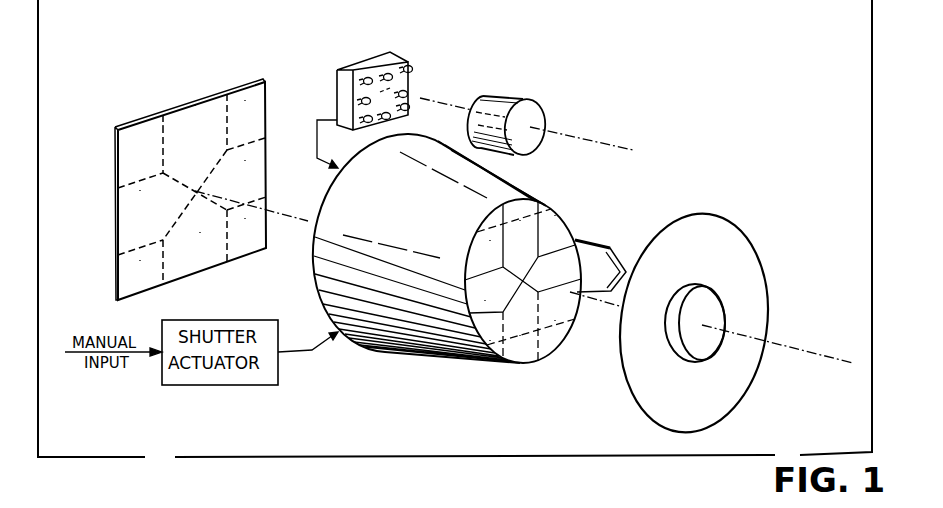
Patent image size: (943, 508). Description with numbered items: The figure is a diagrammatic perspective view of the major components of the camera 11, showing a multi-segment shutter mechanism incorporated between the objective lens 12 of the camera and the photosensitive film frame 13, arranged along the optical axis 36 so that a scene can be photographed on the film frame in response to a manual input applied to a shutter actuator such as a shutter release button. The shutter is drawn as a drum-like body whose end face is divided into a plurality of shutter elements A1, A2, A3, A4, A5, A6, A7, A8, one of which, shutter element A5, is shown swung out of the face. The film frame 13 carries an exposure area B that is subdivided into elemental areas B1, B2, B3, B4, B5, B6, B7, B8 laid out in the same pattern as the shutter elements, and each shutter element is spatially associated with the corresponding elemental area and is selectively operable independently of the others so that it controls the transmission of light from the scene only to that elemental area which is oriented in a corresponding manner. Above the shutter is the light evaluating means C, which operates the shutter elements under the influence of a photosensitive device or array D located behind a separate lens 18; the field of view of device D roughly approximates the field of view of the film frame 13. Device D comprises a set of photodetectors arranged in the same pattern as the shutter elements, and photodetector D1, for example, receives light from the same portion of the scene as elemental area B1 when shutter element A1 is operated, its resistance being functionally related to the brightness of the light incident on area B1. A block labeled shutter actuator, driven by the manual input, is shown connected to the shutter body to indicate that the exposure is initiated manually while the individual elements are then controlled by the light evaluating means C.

The camera 11 is at (783, 156).
The objective lens 12 is at (722, 218).
The photosensitive film frame 13 is at (195, 102).
The lens 18 is at (538, 116).
The optical axis 36 is at (307, 218).
The shutter element A1 is at (485, 252).
The shutter element A2 is at (521, 233).
The shutter element A3 is at (550, 229).
The shutter element A4 is at (485, 293).
The shutter element A5 is at (597, 241).
The shutter element A6 is at (491, 330).
The shutter element A7 is at (519, 323).
The shutter element A8 is at (556, 309).
The film frame area B is at (181, 257).
The elemental area B1 is at (147, 143).
The elemental area B2 is at (195, 125).
The elemental area B3 is at (243, 113).
The elemental area B4 is at (142, 203).
The elemental area B5 is at (241, 172).
The elemental area B6 is at (142, 270).
The elemental area B7 is at (198, 244).
The elemental area B8 is at (243, 230).
The light evaluating means C is at (337, 90).
The photosensitive device or array D is at (423, 70).
The photodetector D1 is at (363, 80).